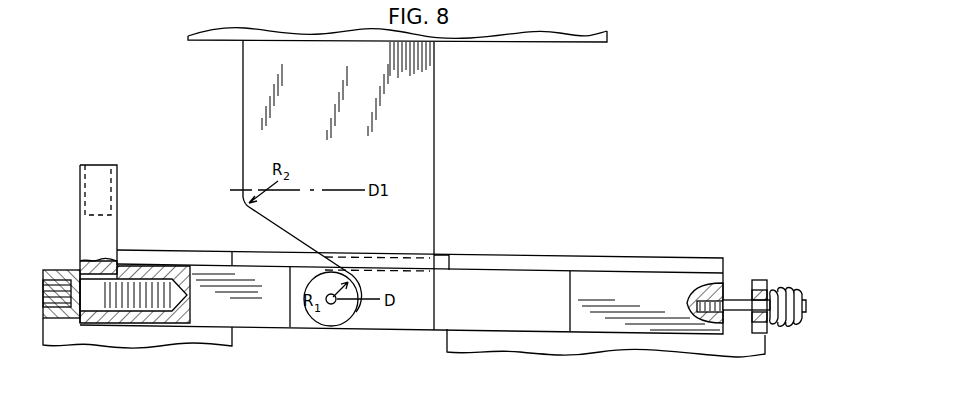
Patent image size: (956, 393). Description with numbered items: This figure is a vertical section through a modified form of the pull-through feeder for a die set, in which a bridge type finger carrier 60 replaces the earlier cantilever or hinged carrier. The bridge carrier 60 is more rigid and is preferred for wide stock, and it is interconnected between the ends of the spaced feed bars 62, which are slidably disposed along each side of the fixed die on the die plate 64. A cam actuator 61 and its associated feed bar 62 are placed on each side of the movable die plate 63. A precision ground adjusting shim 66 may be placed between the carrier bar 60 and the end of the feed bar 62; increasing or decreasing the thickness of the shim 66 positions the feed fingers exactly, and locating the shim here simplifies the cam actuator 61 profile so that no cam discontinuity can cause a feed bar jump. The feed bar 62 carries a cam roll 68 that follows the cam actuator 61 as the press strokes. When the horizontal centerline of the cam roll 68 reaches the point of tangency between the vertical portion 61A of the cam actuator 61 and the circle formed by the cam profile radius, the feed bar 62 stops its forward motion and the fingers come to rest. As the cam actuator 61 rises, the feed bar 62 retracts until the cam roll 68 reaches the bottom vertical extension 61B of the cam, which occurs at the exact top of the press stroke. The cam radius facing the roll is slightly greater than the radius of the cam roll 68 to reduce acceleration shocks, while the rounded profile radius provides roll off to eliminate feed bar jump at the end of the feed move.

The bridge type finger carrier 60 is at (132, 218).
The cam actuator 61 is at (421, 140).
The vertical portion of the cam actuator 61A is at (243, 136).
The bottom vertical extension of the actuating cam 61B is at (358, 312).
The feed bar 62 is at (598, 291).
The movable die plate 63 is at (585, 41).
The die plate 64 is at (697, 340).
The adjusting shim 66 is at (113, 321).
The cam roll 68 is at (326, 313).